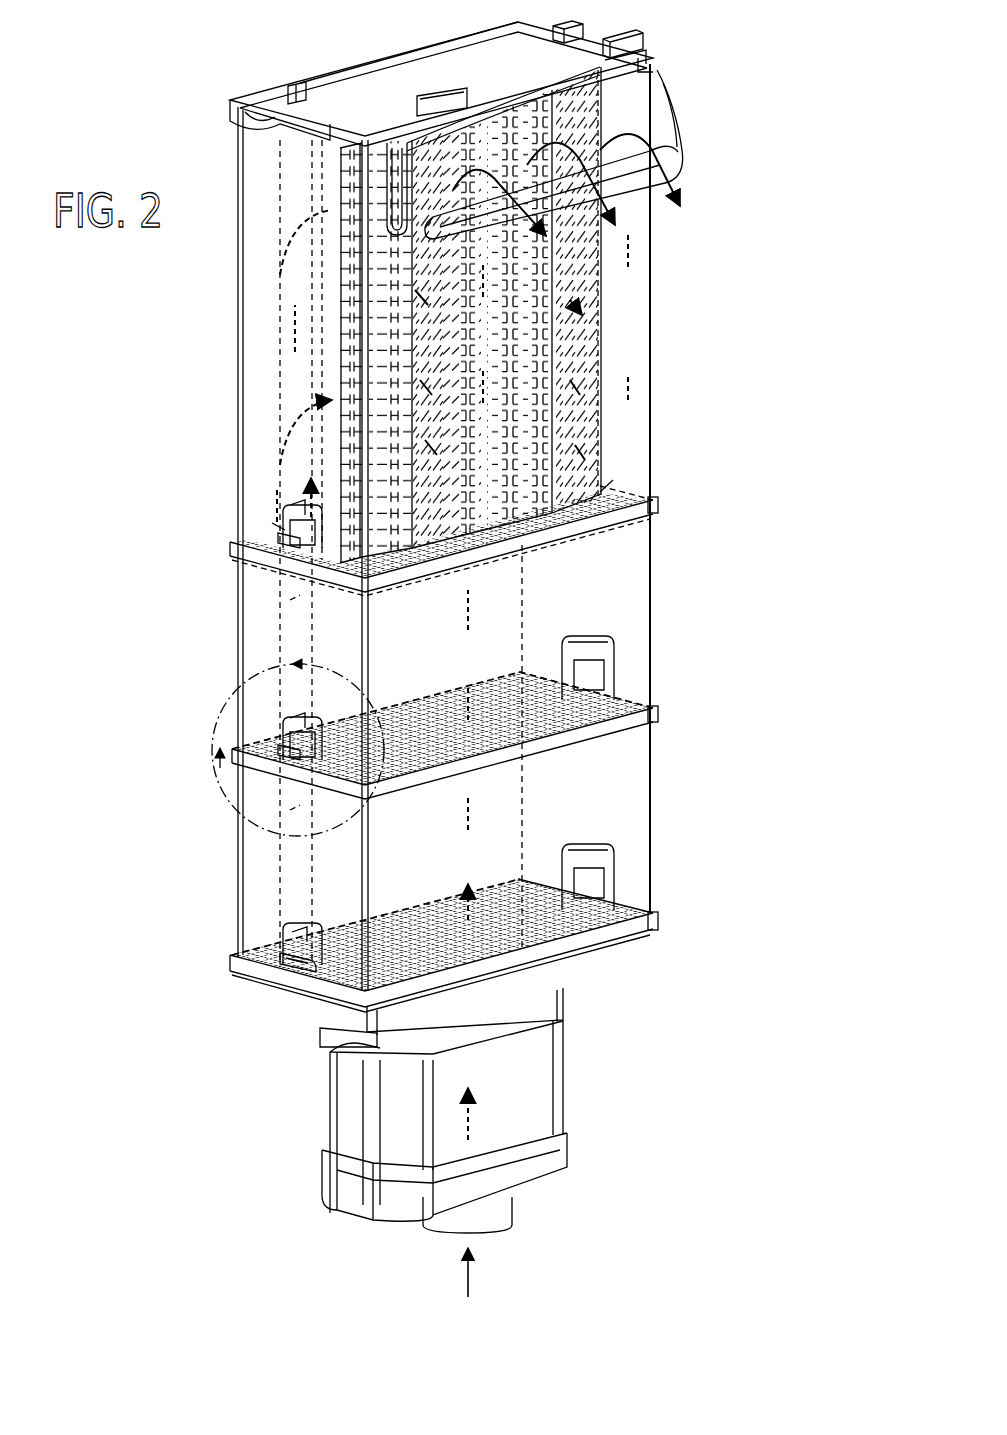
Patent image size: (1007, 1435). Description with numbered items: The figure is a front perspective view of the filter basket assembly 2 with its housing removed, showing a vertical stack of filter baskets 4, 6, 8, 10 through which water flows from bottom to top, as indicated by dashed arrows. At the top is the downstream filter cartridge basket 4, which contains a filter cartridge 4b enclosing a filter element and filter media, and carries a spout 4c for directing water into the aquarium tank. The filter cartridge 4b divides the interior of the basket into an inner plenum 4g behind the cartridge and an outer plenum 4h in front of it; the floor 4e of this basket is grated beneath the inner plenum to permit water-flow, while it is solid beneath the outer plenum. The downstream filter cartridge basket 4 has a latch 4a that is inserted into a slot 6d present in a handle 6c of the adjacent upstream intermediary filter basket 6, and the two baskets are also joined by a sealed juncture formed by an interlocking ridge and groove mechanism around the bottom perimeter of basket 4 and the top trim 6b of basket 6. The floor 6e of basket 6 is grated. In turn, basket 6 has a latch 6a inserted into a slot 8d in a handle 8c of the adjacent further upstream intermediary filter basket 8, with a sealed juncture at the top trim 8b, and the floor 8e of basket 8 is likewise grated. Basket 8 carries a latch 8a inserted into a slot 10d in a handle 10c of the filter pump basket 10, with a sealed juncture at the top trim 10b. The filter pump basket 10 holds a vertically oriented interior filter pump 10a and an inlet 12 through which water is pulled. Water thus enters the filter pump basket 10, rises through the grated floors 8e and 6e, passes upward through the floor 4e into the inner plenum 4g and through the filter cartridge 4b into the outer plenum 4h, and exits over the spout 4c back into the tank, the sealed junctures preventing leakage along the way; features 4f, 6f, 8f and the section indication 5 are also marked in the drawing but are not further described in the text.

The filter basket assembly 2 is at (190, 323).
The downstream filter cartridge basket 4 is at (650, 270).
The latch 4a is at (297, 513).
The filter cartridge 4b is at (607, 82).
The spout 4c is at (683, 157).
The filter cartridge 4e is at (597, 437).
The housing front tab 4f is at (293, 95).
The inner plenum 4g is at (487, 67).
The outer plenum 4h is at (615, 105).
The section line 5 is at (292, 733).
The adjacent upstream intermediary filter basket 6 is at (652, 602).
The latch 6a is at (297, 725).
The top trim 6b is at (653, 502).
The handle 6c is at (273, 520).
The slot 6d is at (287, 553).
The floor 6e is at (630, 673).
The tray hidden edge 6f is at (290, 600).
The adjacent further upstream intermediary filter basket 8 is at (652, 810).
The latch 8a is at (300, 940).
The top trim 8b is at (658, 712).
The handle 8c is at (280, 730).
The slot 8d is at (287, 767).
The floor 8e is at (613, 897).
The tray hidden edge 8f is at (290, 810).
The filter pump basket 10 is at (557, 1083).
The interior filter pump 10a is at (440, 1118).
The top trim 10b is at (658, 920).
The handle 10c is at (283, 947).
The slot 10d is at (283, 967).
The inlet 12 is at (513, 1207).